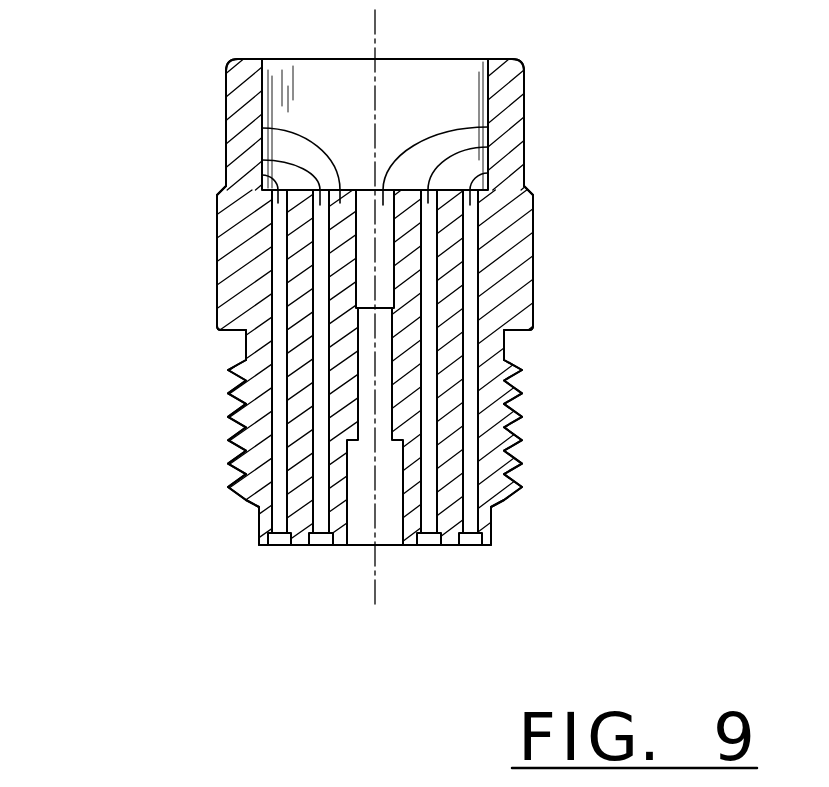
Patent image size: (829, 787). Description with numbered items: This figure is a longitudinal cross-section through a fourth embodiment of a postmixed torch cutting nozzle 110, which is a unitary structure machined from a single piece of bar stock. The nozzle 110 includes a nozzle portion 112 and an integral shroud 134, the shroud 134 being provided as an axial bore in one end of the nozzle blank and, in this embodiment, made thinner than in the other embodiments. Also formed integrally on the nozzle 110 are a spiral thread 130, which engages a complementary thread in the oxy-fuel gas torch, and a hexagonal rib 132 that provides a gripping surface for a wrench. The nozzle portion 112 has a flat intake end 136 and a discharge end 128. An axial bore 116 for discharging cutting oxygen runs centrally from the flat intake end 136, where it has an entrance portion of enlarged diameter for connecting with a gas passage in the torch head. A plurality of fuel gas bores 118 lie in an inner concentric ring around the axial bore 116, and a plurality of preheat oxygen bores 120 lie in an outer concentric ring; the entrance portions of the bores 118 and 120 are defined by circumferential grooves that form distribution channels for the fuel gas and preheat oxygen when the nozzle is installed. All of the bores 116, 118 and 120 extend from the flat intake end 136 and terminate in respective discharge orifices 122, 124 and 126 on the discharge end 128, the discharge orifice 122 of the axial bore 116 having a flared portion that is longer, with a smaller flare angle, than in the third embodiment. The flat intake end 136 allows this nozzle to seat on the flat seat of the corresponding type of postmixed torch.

The cutting nozzle 110 is at (181, 320).
The nozzle portion 112 is at (495, 520).
The axial bore 116 is at (361, 538).
The fuel gas bores 118 is at (320, 535).
The preheat oxygen bores 120 is at (278, 535).
The discharge orifice 122 is at (488, 127).
The discharge orifice 124 is at (262, 160).
The discharge orifice 126 is at (262, 175).
The discharge end 128 is at (262, 128).
The spiral thread 130 is at (518, 388).
The hexagonal rib 132 is at (533, 271).
The shroud 134 is at (524, 75).
The flat intake end 136 is at (407, 545).